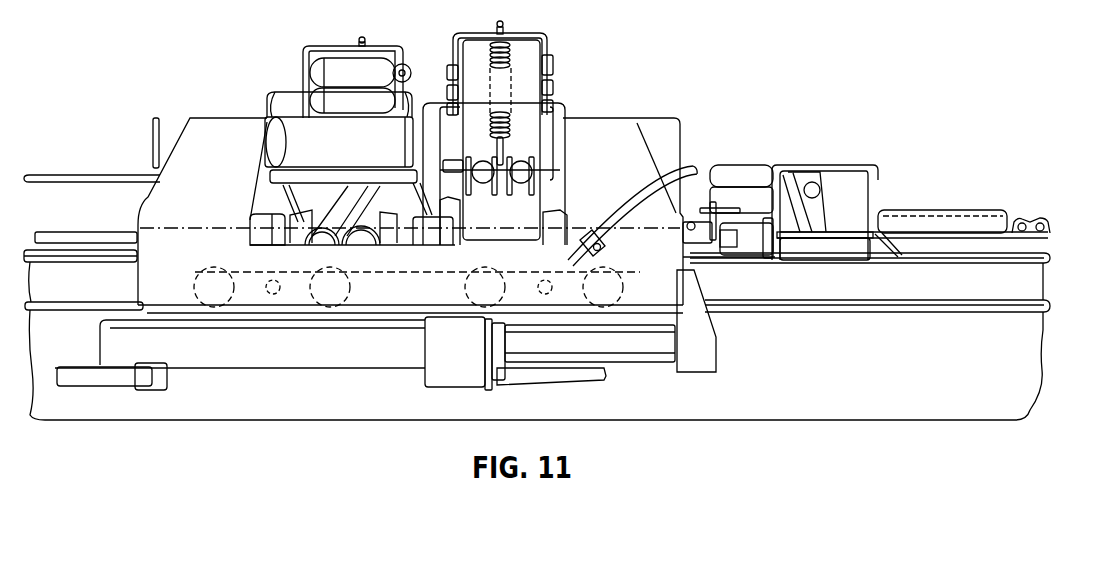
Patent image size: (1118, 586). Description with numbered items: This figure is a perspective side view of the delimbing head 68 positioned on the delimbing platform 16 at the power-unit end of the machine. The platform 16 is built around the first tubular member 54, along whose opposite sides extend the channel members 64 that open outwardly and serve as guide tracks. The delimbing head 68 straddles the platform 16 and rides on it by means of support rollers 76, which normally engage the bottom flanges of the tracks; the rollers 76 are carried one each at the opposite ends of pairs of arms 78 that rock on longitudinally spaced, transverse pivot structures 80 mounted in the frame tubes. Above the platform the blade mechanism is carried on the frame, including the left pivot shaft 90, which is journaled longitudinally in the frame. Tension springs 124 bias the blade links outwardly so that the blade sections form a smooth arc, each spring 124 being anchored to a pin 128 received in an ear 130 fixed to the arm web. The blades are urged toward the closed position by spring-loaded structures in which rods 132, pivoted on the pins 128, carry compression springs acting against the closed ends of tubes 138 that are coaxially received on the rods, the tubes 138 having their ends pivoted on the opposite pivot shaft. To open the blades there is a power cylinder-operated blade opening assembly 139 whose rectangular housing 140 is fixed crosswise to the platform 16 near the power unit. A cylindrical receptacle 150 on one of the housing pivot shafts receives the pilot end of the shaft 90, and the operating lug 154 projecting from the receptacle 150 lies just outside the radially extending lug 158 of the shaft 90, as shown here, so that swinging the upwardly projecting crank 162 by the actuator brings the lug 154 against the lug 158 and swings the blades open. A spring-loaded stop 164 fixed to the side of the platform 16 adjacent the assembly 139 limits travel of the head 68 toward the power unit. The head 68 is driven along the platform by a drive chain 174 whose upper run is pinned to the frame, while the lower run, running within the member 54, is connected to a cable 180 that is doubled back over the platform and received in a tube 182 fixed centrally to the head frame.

The delimbing platform 16 is at (260, 428).
The first tubular member 54 is at (1035, 350).
The channel members 64 is at (812, 295).
The delimbing head 68 is at (291, 80).
The support rollers 76 is at (347, 278).
The arms 78 is at (242, 272).
The pivot structures 80 is at (275, 280).
The left pivot shaft 90 is at (689, 237).
The tension springs 124 is at (510, 58).
The pins 128 is at (461, 163).
The ears 130 is at (527, 183).
The rods 132 is at (498, 178).
The tubes 138 is at (366, 192).
The blade opening assembly 139 is at (822, 185).
The rectangular housing 140 is at (850, 165).
The cylindrical receptacle 150 is at (751, 245).
The lug 154 is at (733, 198).
The lug 158 is at (709, 203).
The crank 162 is at (815, 210).
The spring-loaded stops 164 is at (357, 362).
The drive chain 174 is at (1030, 219).
The cable 180 is at (73, 177).
The tube 182 is at (297, 173).